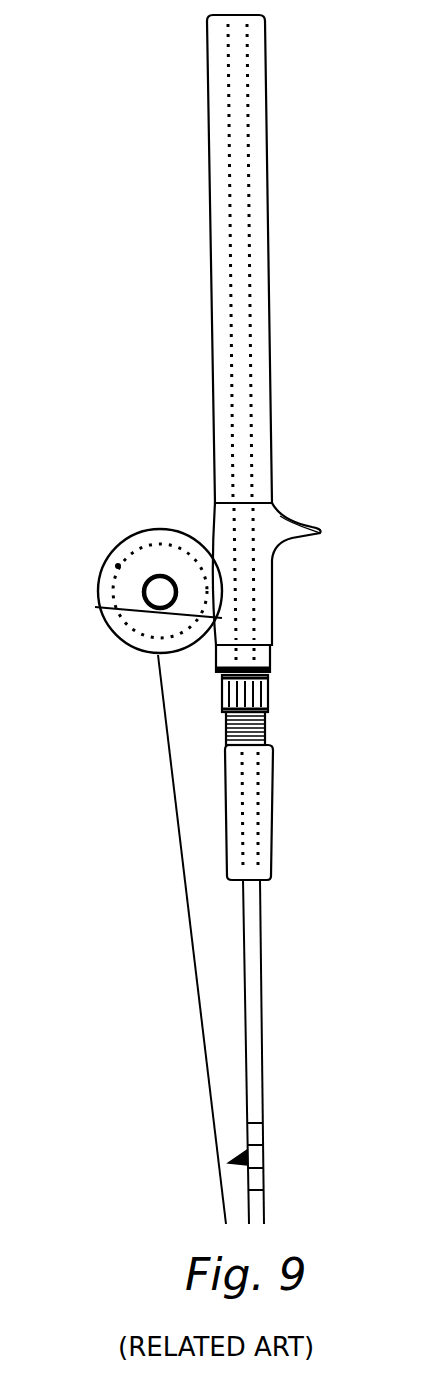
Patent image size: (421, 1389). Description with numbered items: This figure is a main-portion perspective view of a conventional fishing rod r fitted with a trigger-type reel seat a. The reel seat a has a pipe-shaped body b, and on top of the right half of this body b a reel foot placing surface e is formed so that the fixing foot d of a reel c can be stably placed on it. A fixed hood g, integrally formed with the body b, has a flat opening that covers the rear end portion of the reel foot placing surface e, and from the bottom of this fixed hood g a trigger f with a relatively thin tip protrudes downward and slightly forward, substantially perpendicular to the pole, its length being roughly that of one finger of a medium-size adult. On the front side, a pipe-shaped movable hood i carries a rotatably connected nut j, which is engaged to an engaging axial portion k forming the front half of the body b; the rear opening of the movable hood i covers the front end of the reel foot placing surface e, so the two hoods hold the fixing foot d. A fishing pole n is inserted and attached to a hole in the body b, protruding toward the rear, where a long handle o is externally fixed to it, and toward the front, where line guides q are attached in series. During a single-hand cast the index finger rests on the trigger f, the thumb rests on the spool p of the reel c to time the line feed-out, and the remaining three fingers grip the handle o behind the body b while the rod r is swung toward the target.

The handle o is at (215, 322).
The body b is at (271, 608).
The trigger f is at (300, 529).
The fixed hood g is at (218, 522).
The reel c is at (112, 633).
The reel foot placing surface e is at (118, 616).
The fixing foot d is at (212, 548).
The spool p is at (118, 565).
The movable hood i is at (275, 656).
The nut j is at (273, 698).
The reel seat a is at (276, 706).
The engaging axial portion k is at (226, 722).
The fishing pole n is at (255, 1030).
The line guides q is at (238, 1157).
The fishing rod r is at (163, 985).